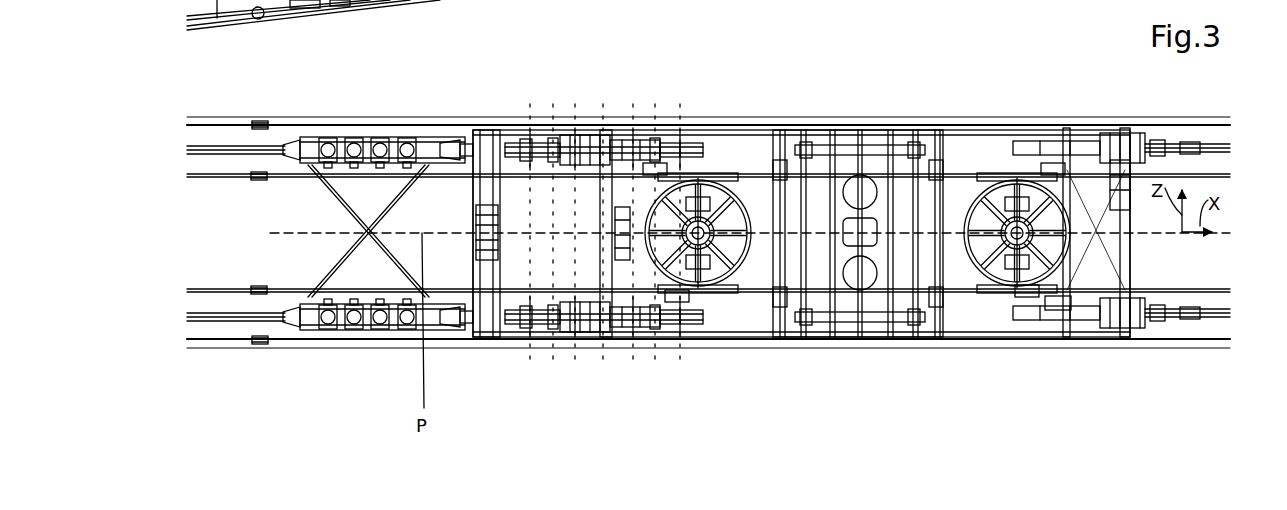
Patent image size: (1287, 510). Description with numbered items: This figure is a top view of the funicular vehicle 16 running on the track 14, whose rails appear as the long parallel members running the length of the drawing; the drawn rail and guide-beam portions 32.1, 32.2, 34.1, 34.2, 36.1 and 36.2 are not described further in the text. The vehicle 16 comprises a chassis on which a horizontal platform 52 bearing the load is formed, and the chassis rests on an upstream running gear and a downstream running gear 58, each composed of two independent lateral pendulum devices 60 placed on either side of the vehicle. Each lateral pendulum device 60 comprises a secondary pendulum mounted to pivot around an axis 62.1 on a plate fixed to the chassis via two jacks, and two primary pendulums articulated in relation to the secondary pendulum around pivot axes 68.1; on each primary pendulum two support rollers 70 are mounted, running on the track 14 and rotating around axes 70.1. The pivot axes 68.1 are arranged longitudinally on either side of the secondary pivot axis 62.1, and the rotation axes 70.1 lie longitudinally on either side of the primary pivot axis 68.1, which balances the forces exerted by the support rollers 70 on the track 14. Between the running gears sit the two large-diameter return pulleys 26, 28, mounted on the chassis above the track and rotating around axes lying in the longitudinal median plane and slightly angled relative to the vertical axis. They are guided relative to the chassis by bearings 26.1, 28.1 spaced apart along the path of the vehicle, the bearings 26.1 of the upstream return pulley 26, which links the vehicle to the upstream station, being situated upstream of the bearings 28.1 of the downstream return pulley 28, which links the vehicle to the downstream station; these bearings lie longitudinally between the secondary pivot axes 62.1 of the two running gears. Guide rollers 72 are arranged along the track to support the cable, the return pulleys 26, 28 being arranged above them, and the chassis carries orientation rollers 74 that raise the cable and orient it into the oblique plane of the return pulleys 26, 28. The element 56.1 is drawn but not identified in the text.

The track 14 is at (240, 320).
The vehicle 16 is at (1032, 95).
The upstream return pulley 26 is at (993, 178).
The bearings of the upstream return pulley 26.1 is at (1007, 218).
The downstream return pulley 28 is at (735, 178).
The bearings of the downstream return pulley 28.1 is at (787, 397).
The first rail 32.1 is at (1230, 289).
The second rail 32.2 is at (1230, 174).
The first guide beam 34.1 is at (1210, 344).
The second guide beam 34.2 is at (1200, 123).
The first rail section 36.1 is at (226, 289).
The second rail section 36.2 is at (216, 178).
The horizontal platform 52 is at (874, 167).
The bearing unit 56.1 is at (1058, 310).
The downstream running gear 58 is at (612, 0).
The lateral pendulum device 60 is at (551, 150).
The secondary pivot axis 62.1 is at (603, 106).
The primary pivot axes 68.1 is at (552, 105).
The support rollers 70 is at (530, 0).
The rotation axes of the support rollers 70.1 is at (532, 106).
The guide rollers 72 is at (260, 121).
The orientation rollers 74 is at (654, 164).